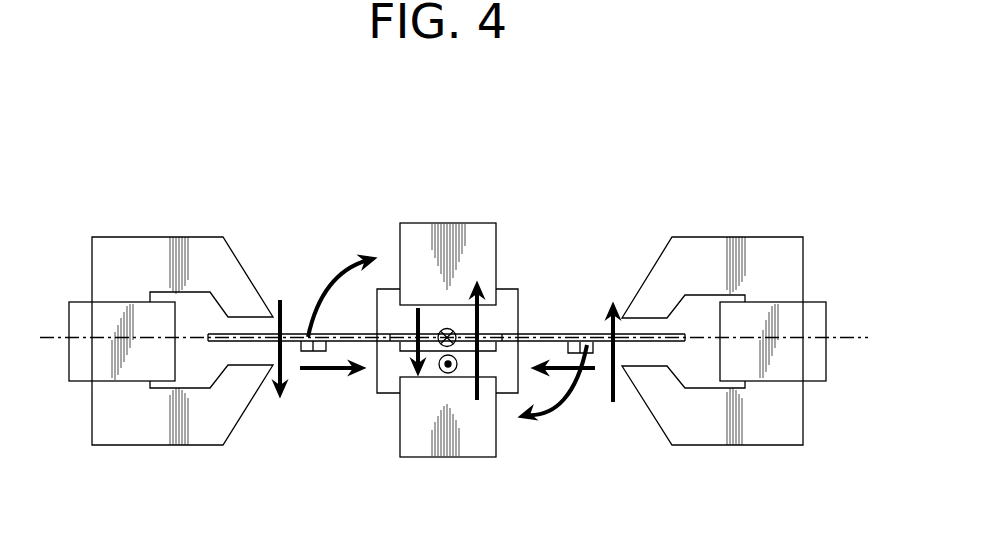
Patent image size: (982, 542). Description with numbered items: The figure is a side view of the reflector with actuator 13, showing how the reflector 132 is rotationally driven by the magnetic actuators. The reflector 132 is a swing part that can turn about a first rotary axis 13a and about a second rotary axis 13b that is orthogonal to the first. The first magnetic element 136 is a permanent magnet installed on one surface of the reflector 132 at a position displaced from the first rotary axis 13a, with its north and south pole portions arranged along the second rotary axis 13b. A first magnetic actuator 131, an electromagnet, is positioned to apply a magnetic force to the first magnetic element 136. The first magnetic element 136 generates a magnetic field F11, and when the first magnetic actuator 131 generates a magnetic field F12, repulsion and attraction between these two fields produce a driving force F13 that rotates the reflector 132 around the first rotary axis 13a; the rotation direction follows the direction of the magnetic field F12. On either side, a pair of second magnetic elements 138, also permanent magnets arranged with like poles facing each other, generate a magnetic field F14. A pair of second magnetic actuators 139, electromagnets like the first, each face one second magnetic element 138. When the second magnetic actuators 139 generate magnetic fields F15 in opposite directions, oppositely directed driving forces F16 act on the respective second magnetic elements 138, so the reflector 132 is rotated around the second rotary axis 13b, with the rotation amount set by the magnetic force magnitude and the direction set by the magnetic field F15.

The reflector with actuator 13 is at (475, 100).
The first rotary axis 13a is at (858, 337).
The second rotary axis 13b is at (438, 347).
The first magnetic actuator 131 is at (448, 222).
The reflector 132 is at (403, 352).
The first magnetic element 136 is at (487, 360).
The second magnetic element 138 is at (305, 353).
The second magnetic actuator 139 is at (140, 233).
The magnetic field F11 is at (443, 372).
The magnetic field F12 is at (462, 308).
The driving force F13 is at (382, 298).
The magnetic field F14 is at (332, 372).
The magnetic field F15 is at (281, 300).
The driving force F16 is at (321, 300).